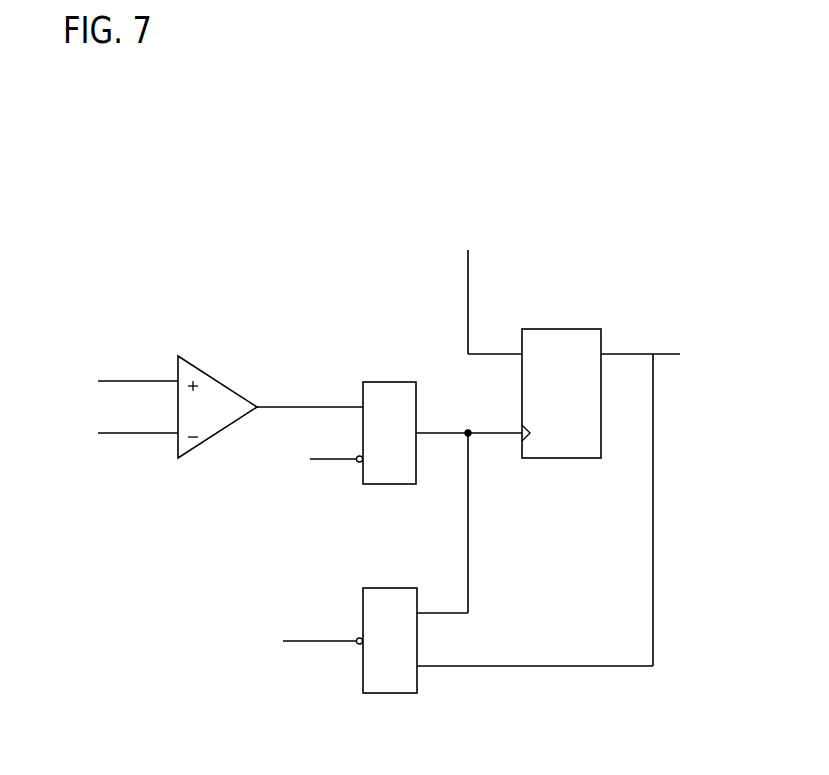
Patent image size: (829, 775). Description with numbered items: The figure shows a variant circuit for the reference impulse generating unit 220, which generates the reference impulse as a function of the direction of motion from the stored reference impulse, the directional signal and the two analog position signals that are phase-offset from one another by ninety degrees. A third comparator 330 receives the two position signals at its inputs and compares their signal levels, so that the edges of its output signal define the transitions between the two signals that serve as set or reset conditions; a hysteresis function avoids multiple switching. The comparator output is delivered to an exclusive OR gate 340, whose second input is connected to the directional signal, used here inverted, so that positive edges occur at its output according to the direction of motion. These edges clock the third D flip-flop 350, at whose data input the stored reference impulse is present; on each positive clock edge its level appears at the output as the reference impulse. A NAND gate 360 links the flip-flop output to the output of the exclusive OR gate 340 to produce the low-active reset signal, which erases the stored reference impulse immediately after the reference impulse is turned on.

The reference impulse generating unit 220 is at (318, 196).
The third comparator 330 is at (207, 385).
The exclusive OR gate 340 is at (385, 390).
The third D flip-flop 350 is at (568, 350).
The NAND gate 360 is at (388, 598).